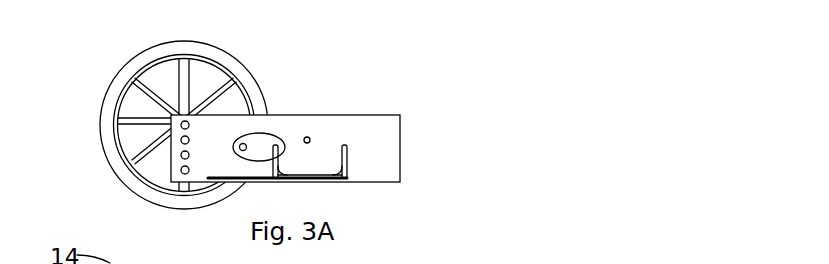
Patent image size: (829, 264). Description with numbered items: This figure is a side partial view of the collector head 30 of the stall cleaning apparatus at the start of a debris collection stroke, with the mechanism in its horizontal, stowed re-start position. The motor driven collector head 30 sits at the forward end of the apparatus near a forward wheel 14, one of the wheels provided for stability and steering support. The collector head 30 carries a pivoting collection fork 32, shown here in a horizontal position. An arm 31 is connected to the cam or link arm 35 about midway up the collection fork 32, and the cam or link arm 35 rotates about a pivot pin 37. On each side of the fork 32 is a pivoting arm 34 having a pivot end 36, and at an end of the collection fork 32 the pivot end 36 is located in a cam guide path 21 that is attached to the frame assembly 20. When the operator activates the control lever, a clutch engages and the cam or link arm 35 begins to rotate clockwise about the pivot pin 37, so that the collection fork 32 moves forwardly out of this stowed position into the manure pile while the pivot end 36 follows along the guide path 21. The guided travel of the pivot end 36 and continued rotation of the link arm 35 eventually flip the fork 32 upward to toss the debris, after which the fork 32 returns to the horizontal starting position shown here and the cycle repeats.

The forward wheel 14 is at (141, 50).
The frame assembly 20 is at (377, 113).
The cam guide path 21 is at (347, 178).
The collector head 30 is at (318, 147).
The arm 31 is at (277, 143).
The collection fork 32 is at (234, 182).
The pivoting arm 34 is at (347, 180).
The cam or link arm 35 is at (264, 131).
The pivot end 36 is at (345, 146).
The pivot pin 37 is at (236, 139).